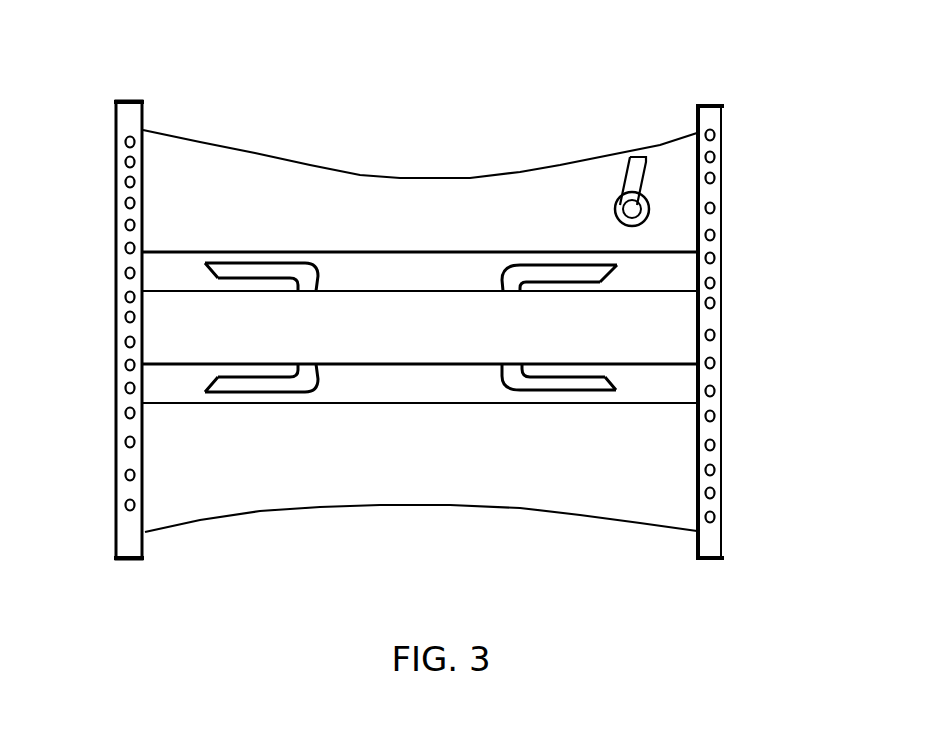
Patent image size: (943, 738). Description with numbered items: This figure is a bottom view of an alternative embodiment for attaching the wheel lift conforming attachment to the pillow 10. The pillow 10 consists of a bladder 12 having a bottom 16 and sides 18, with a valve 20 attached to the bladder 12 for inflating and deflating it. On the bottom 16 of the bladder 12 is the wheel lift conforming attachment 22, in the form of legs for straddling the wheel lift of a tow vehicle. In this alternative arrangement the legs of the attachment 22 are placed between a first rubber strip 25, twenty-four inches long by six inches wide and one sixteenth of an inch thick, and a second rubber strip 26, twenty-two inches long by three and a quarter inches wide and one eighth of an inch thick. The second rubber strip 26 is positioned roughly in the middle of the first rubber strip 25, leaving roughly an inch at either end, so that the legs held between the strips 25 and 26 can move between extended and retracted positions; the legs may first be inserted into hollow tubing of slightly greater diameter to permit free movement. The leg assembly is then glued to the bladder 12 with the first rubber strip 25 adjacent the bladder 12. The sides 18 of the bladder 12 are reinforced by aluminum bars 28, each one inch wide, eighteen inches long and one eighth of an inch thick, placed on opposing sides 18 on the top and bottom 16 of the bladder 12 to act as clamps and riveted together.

The pillow 10 is at (484, 100).
The bladder 12 is at (229, 218).
The bottom 16 is at (383, 181).
The sides 18 is at (494, 176).
The valve 20 is at (638, 150).
The wheel lift conforming attachment 22 is at (262, 383).
The first rubber strip 25 is at (400, 385).
The second rubber strip 26 is at (458, 333).
The aluminum bars 28 is at (121, 193).